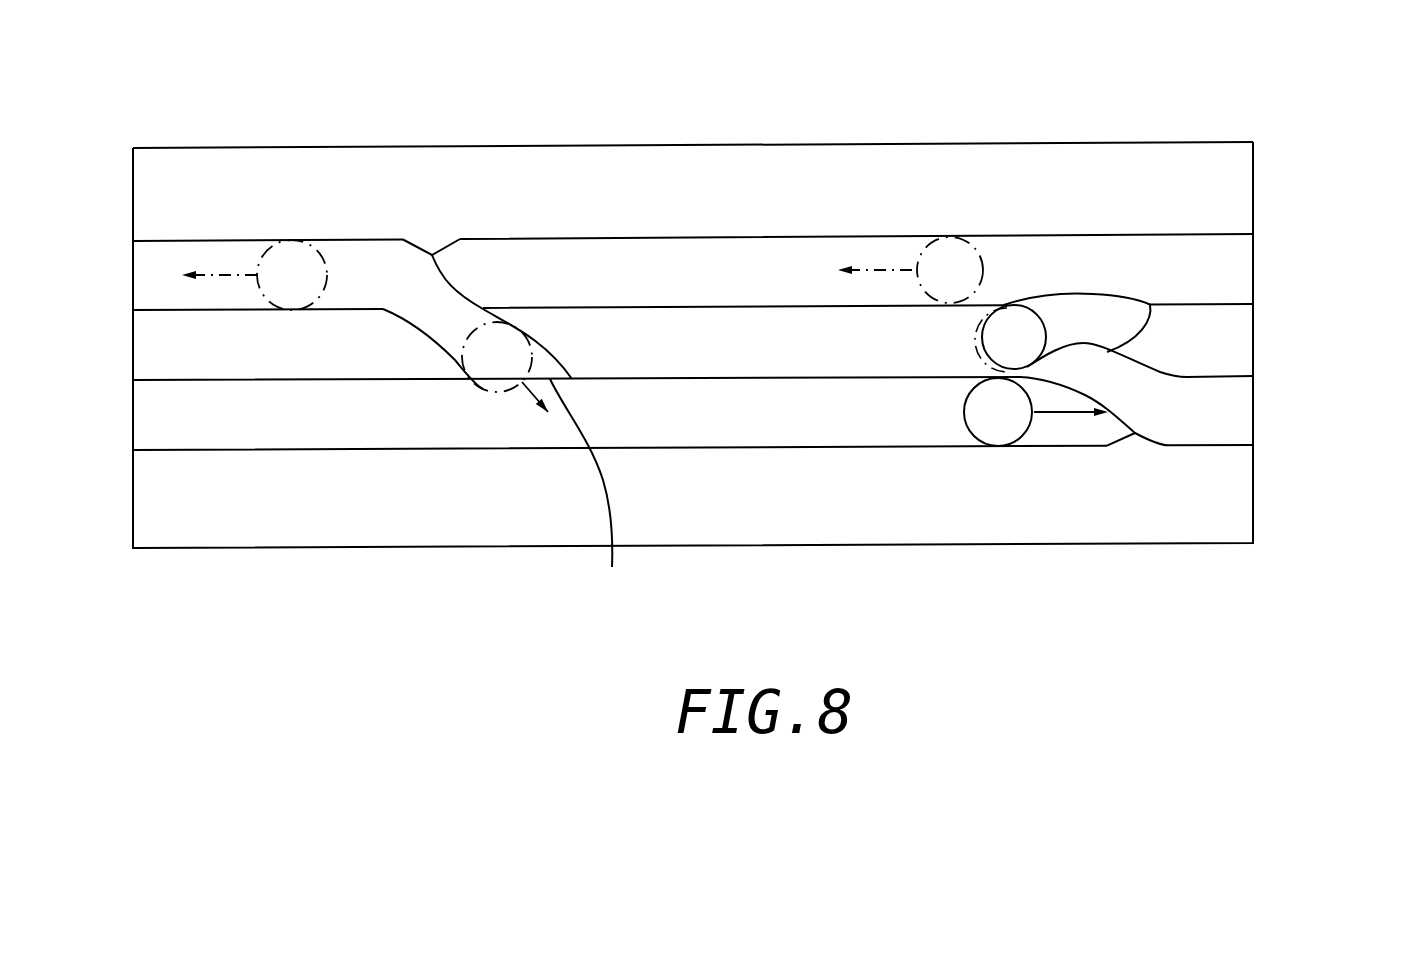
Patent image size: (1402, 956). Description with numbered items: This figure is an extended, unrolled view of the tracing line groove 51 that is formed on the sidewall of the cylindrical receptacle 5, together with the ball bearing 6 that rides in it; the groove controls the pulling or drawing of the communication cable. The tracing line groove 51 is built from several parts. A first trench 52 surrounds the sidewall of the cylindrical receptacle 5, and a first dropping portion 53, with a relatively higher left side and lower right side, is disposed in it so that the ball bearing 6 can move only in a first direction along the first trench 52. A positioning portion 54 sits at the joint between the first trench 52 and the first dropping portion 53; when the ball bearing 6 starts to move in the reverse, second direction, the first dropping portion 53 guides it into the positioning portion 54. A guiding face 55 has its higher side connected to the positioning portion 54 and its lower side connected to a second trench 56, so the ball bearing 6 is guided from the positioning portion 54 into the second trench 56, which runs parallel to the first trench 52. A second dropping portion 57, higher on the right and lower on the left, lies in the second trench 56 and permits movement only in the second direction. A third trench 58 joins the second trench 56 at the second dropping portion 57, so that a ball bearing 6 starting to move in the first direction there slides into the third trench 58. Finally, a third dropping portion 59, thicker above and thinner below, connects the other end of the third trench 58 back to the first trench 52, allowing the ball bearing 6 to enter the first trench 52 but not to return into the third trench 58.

The cylindrical receptacle 5 is at (555, 185).
The ball bearing 6 is at (992, 430).
The tracing line groove 51 is at (1282, 393).
The first trench 52 is at (832, 415).
The first dropping portion 53 is at (1113, 413).
The positioning portion 54 is at (1013, 327).
The guiding face 55 is at (1088, 322).
The second trench 56 is at (170, 263).
The second dropping portion 57 is at (453, 285).
The third trench 58 is at (437, 323).
The third dropping portion 59 is at (550, 463).